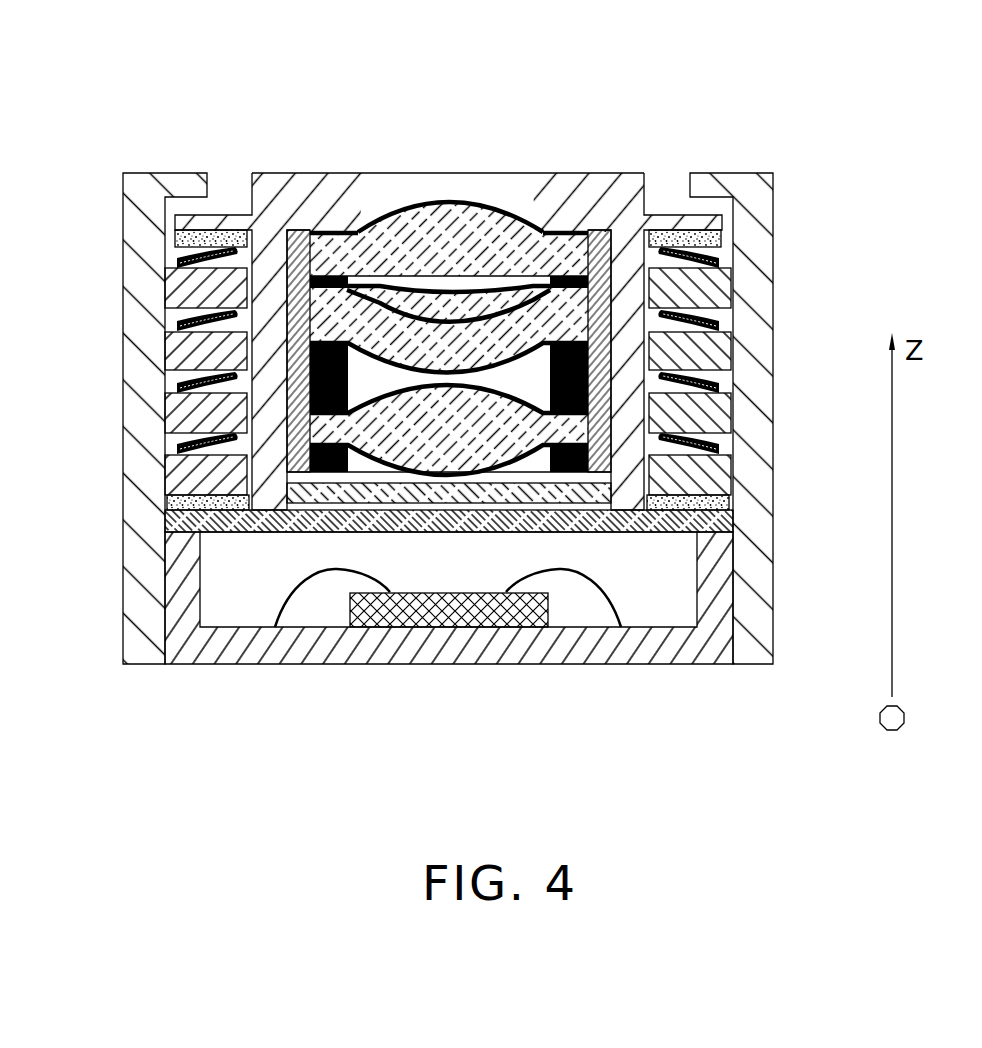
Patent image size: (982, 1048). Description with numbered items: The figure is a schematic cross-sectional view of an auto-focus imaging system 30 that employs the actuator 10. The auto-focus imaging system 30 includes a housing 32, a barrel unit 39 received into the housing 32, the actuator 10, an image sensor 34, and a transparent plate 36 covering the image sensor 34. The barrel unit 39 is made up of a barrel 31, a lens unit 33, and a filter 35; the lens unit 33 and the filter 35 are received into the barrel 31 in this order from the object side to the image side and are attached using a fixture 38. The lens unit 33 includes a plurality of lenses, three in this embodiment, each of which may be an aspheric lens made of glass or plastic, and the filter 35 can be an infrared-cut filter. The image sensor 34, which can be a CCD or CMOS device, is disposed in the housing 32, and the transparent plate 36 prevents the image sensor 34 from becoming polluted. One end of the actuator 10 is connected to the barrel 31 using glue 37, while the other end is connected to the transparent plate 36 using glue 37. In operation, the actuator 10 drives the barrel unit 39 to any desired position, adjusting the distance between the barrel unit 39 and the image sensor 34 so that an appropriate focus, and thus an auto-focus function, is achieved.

The actuator 10 is at (183, 297).
The auto-focus imaging system 30 is at (486, 43).
The barrel 31 is at (615, 190).
The housing 32 is at (755, 525).
The lens unit 33 is at (495, 422).
The image sensor 34 is at (460, 617).
The filter 35 is at (583, 497).
The transparent plate 36 is at (660, 525).
The glue 37 is at (195, 237).
The fixture 38 is at (600, 257).
The barrel unit 39 is at (253, 188).